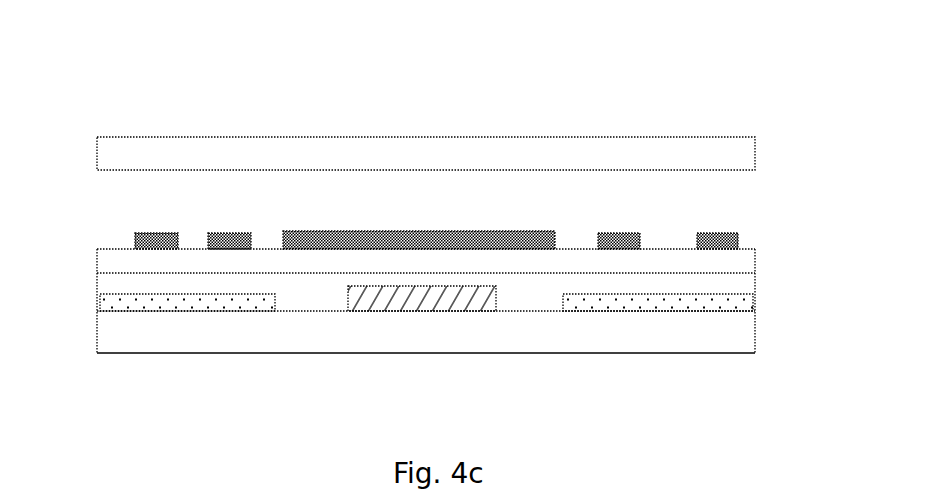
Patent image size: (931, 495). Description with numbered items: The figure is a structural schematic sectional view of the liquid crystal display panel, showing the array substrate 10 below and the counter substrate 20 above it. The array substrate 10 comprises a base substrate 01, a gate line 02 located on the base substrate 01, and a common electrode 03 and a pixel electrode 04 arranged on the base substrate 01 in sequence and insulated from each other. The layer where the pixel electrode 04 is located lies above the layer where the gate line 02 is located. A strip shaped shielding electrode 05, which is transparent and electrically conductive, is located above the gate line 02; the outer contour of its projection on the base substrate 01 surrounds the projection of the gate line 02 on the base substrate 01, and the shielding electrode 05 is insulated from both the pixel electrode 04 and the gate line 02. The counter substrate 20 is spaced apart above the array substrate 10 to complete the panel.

The counter substrate 20 is at (426, 131).
The array substrate 10 is at (459, 286).
The base substrate 01 is at (426, 364).
The gate line 02 is at (416, 349).
The common electrode 03 is at (434, 355).
The pixel electrode 04 is at (438, 221).
The shielding electrode 05 is at (419, 174).